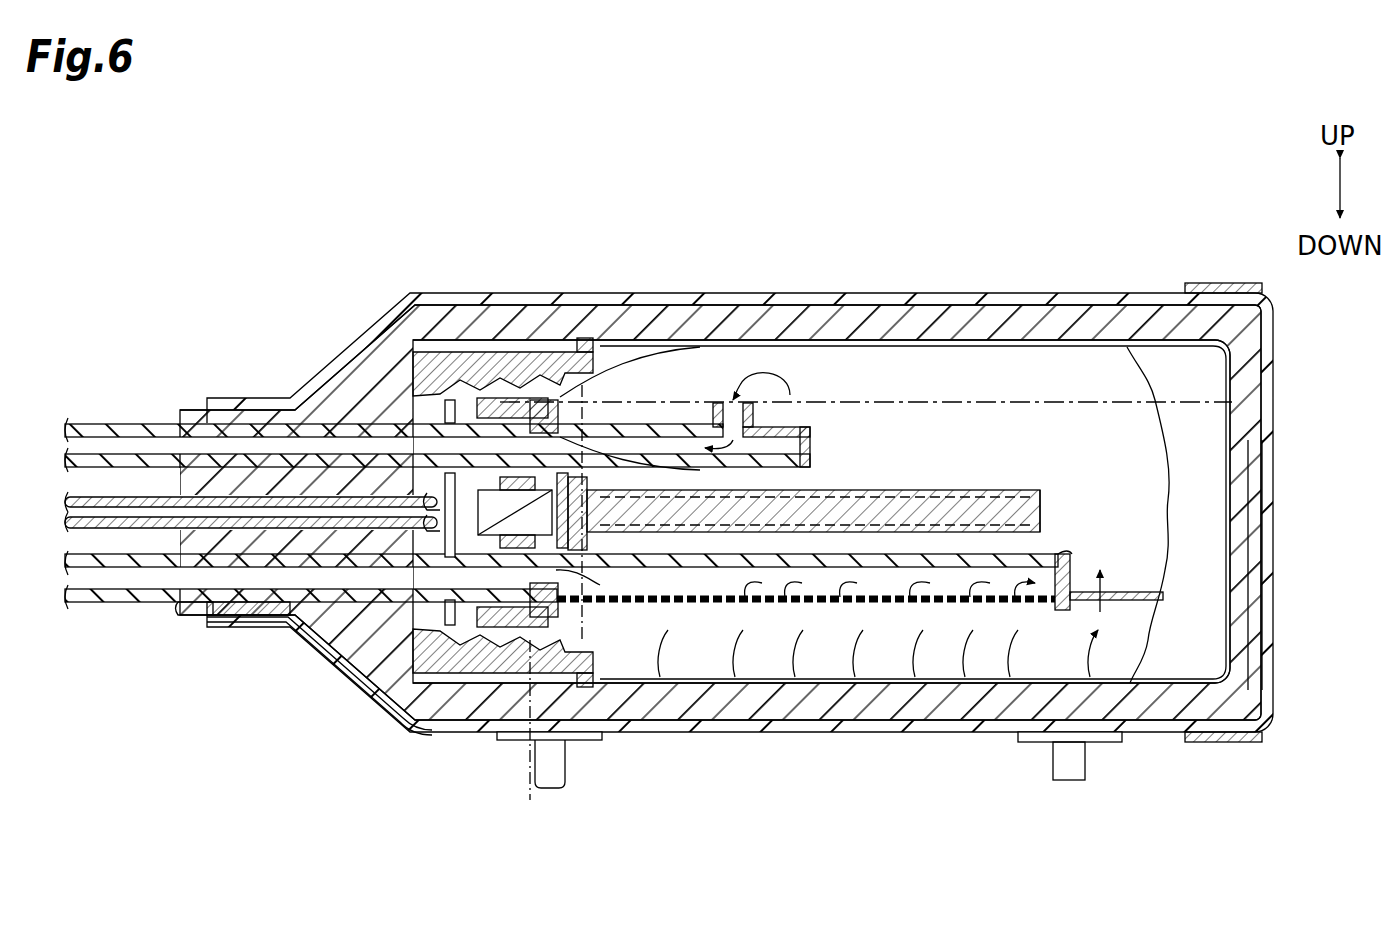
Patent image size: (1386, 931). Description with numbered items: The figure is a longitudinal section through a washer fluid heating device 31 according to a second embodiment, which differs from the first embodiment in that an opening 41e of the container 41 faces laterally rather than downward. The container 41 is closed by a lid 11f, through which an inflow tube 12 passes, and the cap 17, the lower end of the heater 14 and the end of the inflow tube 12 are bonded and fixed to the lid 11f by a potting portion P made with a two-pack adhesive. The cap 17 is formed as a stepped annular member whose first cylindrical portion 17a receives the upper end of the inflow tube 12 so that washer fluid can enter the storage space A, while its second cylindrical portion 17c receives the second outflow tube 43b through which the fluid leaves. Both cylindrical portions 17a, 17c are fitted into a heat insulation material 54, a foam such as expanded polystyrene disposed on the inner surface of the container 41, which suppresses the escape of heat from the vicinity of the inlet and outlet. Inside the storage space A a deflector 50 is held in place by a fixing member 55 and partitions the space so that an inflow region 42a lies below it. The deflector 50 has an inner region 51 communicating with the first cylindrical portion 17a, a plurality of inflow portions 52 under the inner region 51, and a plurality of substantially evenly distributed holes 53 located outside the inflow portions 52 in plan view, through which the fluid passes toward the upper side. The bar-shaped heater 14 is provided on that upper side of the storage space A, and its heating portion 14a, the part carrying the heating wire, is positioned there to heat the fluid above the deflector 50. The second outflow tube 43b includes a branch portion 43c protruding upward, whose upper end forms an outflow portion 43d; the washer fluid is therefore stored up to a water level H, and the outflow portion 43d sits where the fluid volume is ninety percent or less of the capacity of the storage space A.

The washer fluid heating device 31 is at (1108, 199).
The container 41 is at (1219, 282).
The opening 41e is at (205, 615).
The lid 11f is at (243, 614).
The inflow tube 12 is at (102, 602).
The potting portion P is at (368, 700).
The cap 17 is at (455, 688).
The second cylindrical portion 17c is at (575, 430).
The first cylindrical portion 17a is at (560, 576).
The heat insulation material 54 is at (532, 745).
The inflow region 42a is at (1060, 655).
The heater 14 is at (990, 490).
The heating portion 14a is at (932, 490).
The second outflow tube 43b is at (834, 468).
The branch portion 43c is at (700, 425).
The outflow portion 43d is at (725, 390).
The water level H is at (1042, 398).
The deflector 50 is at (1173, 572).
The inner region 51 is at (778, 568).
The inflow portions 52 is at (822, 604).
The holes 53 is at (1125, 603).
The fixing member 55 is at (1043, 553).
The storage space A is at (1130, 535).